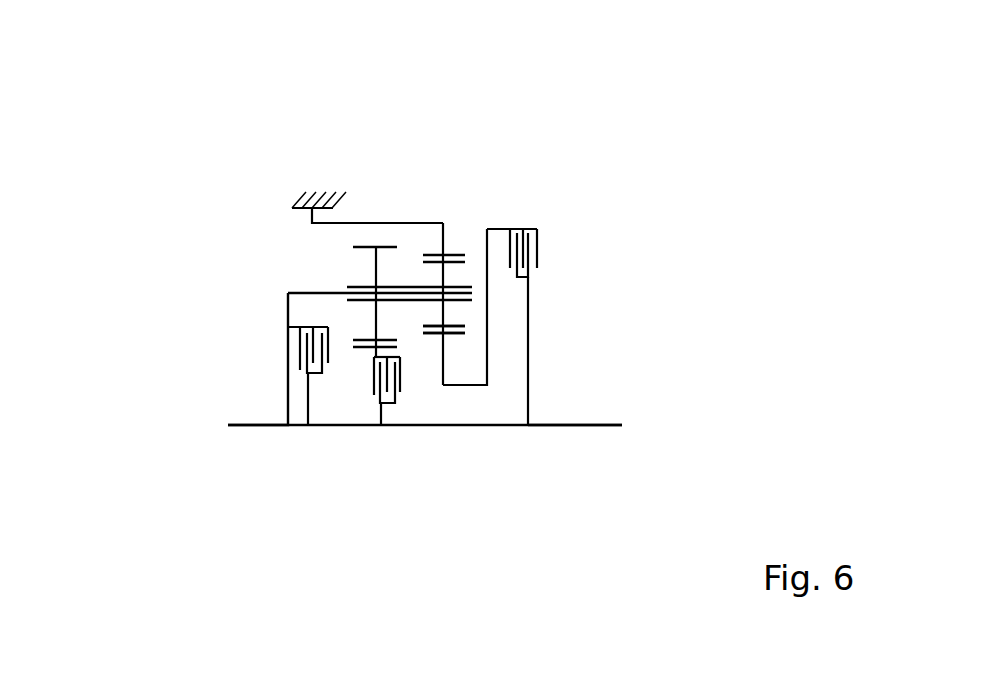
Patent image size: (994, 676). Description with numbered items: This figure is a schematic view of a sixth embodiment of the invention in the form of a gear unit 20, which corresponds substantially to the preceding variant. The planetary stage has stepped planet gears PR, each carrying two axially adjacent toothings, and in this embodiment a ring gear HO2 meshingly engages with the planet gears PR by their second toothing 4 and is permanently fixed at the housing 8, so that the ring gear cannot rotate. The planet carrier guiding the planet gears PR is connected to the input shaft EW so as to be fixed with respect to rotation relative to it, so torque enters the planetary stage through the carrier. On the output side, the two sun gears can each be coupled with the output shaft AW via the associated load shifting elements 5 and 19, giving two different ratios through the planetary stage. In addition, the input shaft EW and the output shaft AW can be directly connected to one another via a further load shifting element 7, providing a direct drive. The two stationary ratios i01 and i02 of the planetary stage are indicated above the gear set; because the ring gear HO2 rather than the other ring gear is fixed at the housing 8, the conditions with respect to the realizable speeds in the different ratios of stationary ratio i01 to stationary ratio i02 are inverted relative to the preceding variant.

The gear unit 20 is at (243, 183).
The housing 8 is at (325, 197).
The ring gear HO2 is at (452, 255).
The second toothing 4 is at (458, 253).
The load shifting element 5 is at (525, 222).
The planet gears PR is at (360, 287).
The stationary ratio i01 is at (398, 122).
The stationary ratio i02 is at (465, 121).
The input shaft EW is at (262, 424).
The output shaft AW is at (578, 423).
The load shifting element 7 is at (315, 378).
The load shifting element 19 is at (387, 408).